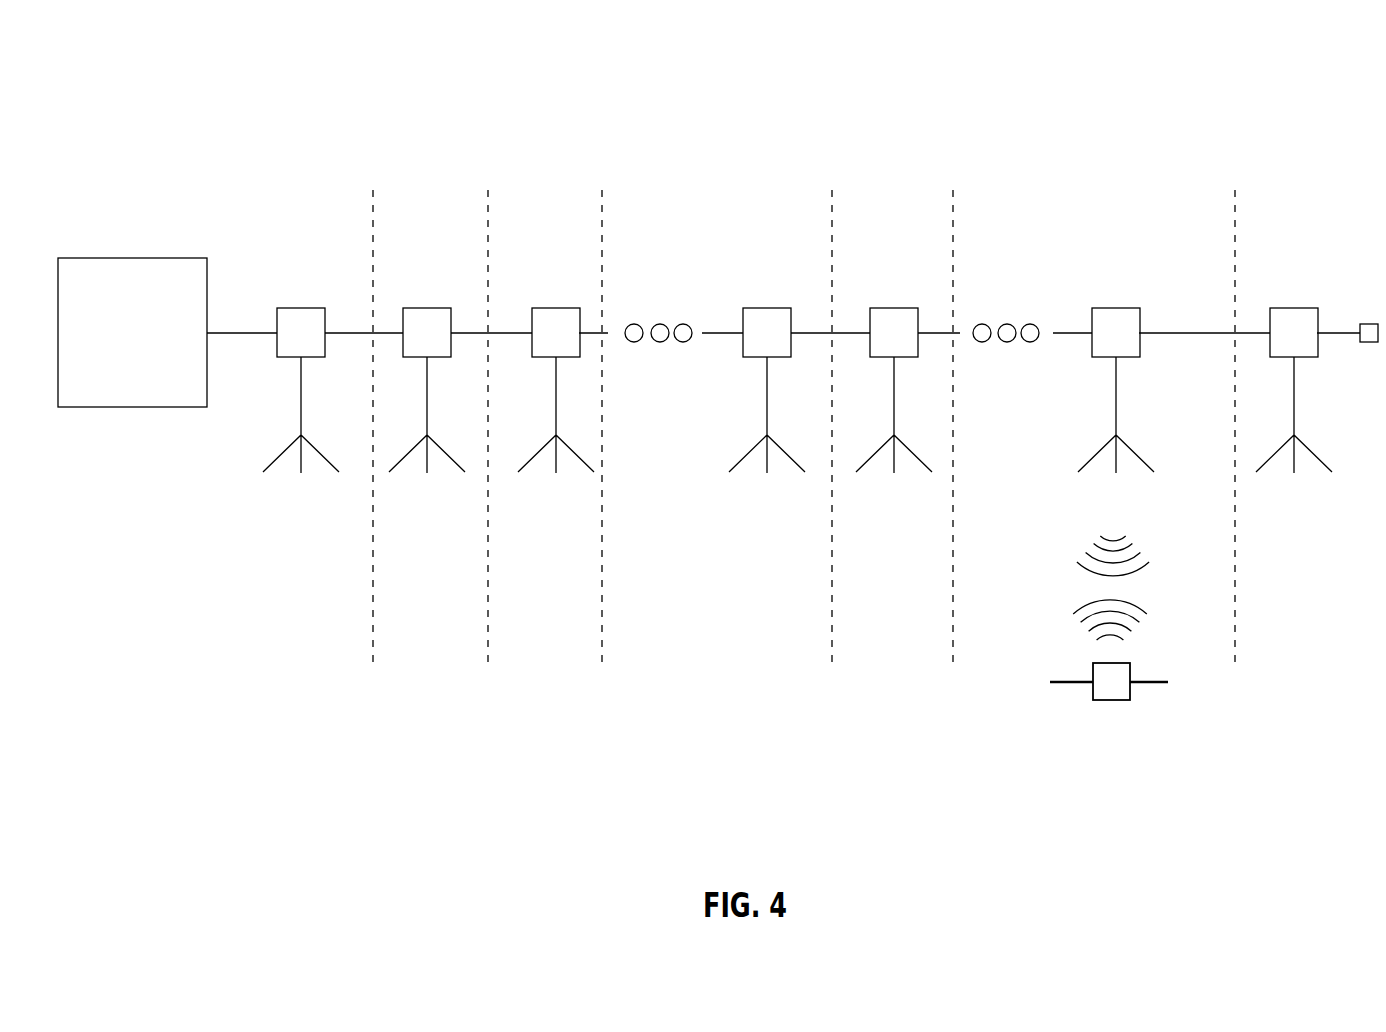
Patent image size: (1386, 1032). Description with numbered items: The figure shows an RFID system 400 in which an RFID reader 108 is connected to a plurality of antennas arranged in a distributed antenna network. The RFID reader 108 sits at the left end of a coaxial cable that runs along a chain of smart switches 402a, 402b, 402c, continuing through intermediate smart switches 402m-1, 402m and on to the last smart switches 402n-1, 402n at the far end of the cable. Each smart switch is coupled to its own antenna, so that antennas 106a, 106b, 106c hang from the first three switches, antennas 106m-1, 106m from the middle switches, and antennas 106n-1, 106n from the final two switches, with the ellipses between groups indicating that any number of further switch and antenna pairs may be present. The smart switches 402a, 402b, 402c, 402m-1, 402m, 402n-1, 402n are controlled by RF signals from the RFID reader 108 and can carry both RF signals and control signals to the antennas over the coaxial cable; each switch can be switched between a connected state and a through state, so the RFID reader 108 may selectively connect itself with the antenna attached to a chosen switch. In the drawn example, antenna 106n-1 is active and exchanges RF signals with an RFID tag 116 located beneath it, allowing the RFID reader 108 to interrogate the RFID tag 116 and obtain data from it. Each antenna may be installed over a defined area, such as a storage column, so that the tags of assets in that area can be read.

The RFID system 400 is at (228, 105).
The RFID reader 108 is at (150, 361).
The smart switch 402a is at (302, 308).
The smart switch 402b is at (428, 308).
The smart switch 402c is at (556, 308).
The smart switch 402m-1 is at (767, 308).
The smart switch 402m is at (894, 308).
The smart switch 402n-1 is at (1116, 308).
The smart switch 402n is at (1294, 308).
The antenna 106a is at (279, 519).
The antenna 106b is at (404, 519).
The antenna 106c is at (533, 519).
The antenna 106m-1 is at (733, 519).
The antenna 106m is at (868, 519).
The antenna 106n-1 is at (1082, 519).
The antenna 106n is at (1270, 519).
The RFID tag 116 is at (1122, 700).